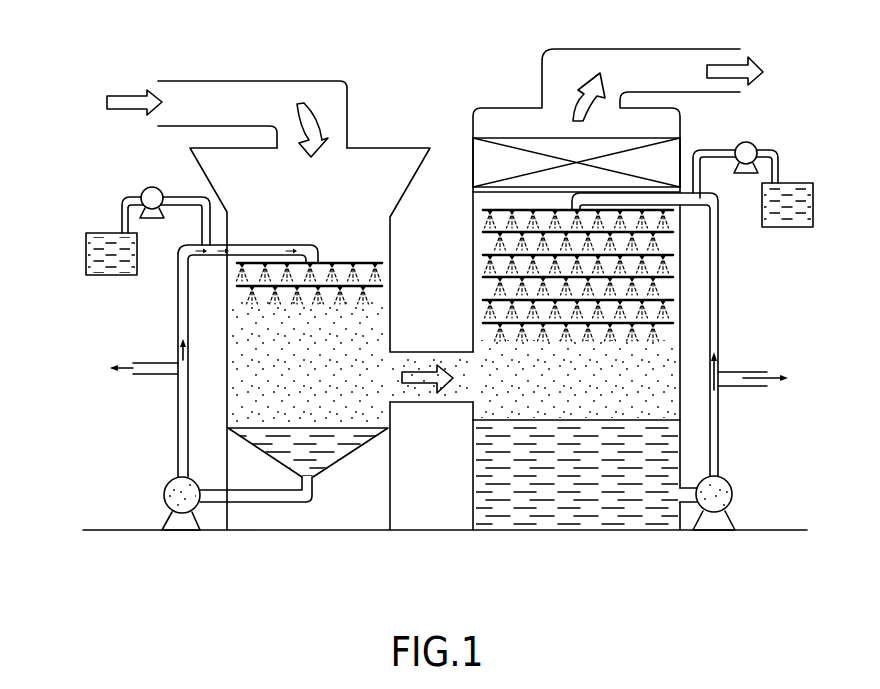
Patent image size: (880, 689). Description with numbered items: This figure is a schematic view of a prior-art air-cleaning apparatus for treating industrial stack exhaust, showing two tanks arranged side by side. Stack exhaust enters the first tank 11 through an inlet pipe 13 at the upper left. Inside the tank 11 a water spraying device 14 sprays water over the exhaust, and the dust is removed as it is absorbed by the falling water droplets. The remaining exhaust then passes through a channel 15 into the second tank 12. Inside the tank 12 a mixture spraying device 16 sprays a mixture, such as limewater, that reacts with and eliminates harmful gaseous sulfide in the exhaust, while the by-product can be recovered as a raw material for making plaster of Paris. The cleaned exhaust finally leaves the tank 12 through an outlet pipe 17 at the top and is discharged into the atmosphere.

The tank 11 is at (360, 237).
The tank 12 is at (673, 277).
The inlet pipe 13 is at (268, 93).
The water spraying device 14 is at (255, 248).
The channel 15 is at (428, 392).
The mixture spraying device 16 is at (660, 200).
The outlet pipe 17 is at (632, 57).